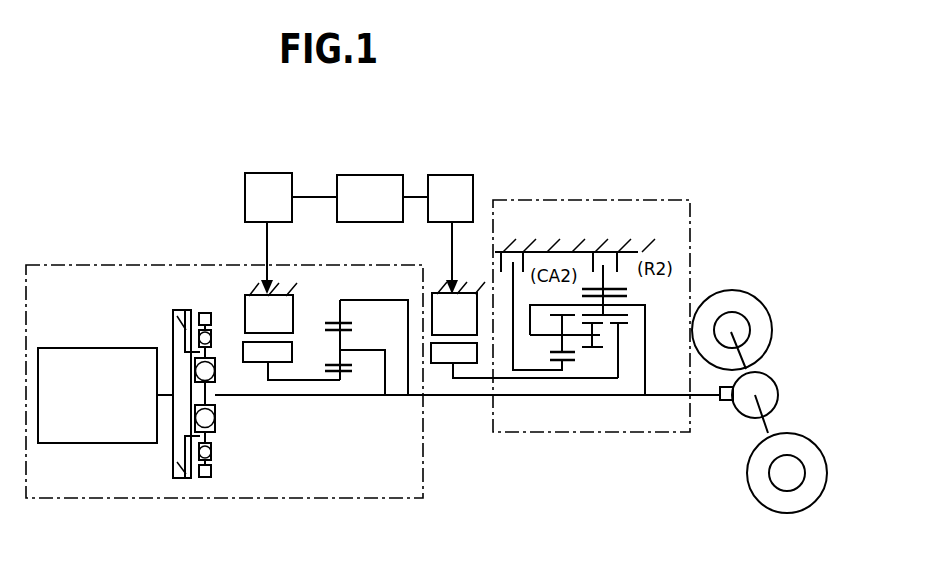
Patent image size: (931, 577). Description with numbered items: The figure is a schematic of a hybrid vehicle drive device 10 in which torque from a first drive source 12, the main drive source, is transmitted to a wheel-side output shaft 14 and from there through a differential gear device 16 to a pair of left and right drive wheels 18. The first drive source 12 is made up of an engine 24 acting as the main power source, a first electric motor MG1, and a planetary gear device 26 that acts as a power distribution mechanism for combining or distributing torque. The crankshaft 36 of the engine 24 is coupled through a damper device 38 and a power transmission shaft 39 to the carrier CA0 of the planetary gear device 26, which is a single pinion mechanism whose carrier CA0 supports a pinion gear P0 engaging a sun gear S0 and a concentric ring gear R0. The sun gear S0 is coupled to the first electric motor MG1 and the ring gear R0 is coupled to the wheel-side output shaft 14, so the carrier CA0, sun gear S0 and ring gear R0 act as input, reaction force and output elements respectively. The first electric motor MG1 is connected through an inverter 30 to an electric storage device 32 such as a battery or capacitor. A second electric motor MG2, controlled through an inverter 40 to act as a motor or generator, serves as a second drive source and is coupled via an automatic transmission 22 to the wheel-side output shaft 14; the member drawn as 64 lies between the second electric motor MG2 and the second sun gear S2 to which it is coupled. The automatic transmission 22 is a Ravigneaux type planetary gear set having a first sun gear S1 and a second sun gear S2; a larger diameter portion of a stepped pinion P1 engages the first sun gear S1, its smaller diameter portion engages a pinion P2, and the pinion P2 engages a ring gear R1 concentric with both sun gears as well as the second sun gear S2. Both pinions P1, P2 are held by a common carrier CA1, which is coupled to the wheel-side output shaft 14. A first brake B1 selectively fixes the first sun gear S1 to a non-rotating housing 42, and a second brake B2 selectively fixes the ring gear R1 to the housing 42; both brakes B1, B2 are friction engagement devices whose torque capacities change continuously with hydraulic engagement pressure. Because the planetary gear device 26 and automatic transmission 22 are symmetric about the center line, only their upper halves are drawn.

The hybrid vehicle drive device 10 is at (630, 122).
The first drive source 12 is at (379, 499).
The wheel-side output shaft 14 is at (707, 400).
The differential gear device 16 is at (767, 388).
The drive wheels 18 is at (760, 318).
The automatic transmission 22 is at (701, 222).
The engine 24 is at (94, 363).
The planetary gear device 26 is at (344, 375).
The inverter 30 is at (286, 181).
The electric storage device 32 is at (360, 181).
The crankshaft 36 is at (167, 396).
The damper device 38 is at (184, 303).
The power transmission shaft 39 is at (247, 397).
The inverter 40 is at (459, 181).
The housing 42 is at (570, 243).
The transmitting member connecting MG2 to sun gear S2 64 is at (518, 378).
The first electric motor MG1 is at (291, 331).
The second electric motor MG2 is at (458, 322).
The ring gear R0 is at (337, 320).
The pinion gear P0 is at (330, 362).
The carrier CA0 is at (352, 350).
The sun gear S0 is at (346, 375).
The first brake B1 is at (514, 262).
The second brake B2 is at (598, 260).
The carrier CA1 is at (527, 323).
The ring gear R1 is at (628, 287).
The stepped pinion P1 is at (600, 347).
The first sun gear S1 is at (556, 362).
The pinion P2 is at (628, 298).
The second sun gear S2 is at (622, 323).